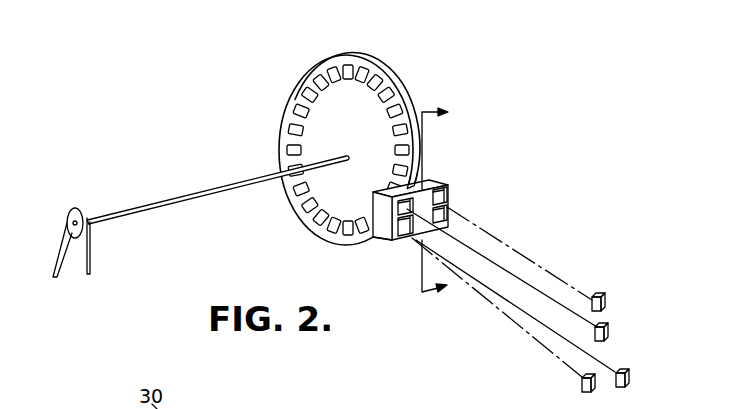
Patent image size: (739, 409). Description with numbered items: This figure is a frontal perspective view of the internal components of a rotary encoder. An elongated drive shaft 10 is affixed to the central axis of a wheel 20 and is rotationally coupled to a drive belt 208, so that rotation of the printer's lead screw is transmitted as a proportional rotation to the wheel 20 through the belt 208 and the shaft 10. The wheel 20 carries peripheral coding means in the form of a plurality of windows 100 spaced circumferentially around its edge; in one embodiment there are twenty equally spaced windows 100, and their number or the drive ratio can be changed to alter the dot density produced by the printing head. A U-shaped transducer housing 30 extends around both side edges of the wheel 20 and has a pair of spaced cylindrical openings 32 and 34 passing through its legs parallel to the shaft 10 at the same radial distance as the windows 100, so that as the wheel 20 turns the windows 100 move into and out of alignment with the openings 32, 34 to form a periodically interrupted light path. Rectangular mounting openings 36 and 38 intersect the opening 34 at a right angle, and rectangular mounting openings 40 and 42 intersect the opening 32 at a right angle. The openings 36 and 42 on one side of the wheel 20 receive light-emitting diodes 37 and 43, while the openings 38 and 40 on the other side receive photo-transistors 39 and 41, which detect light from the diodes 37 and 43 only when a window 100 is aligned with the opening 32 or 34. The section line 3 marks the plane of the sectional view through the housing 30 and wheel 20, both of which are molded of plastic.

The drive shaft 10 is at (163, 197).
The wheel 20 is at (385, 62).
The windows 100 is at (326, 66).
The drive belt 208 is at (92, 248).
The transducer housing 30 is at (436, 178).
The cylindrical opening 32 is at (382, 207).
The cylindrical opening 34 is at (380, 226).
The rectangular mounting opening 36 is at (408, 242).
The rectangular mounting opening 38 is at (412, 248).
The rectangular mounting opening 40 is at (443, 197).
The rectangular mounting opening 42 is at (406, 203).
The light-emitting diode 37 is at (590, 392).
The photo-transistor 39 is at (612, 329).
The photo-transistor 41 is at (628, 276).
The light-emitting diode 43 is at (628, 376).
The section line 3- 3 is at (446, 203).